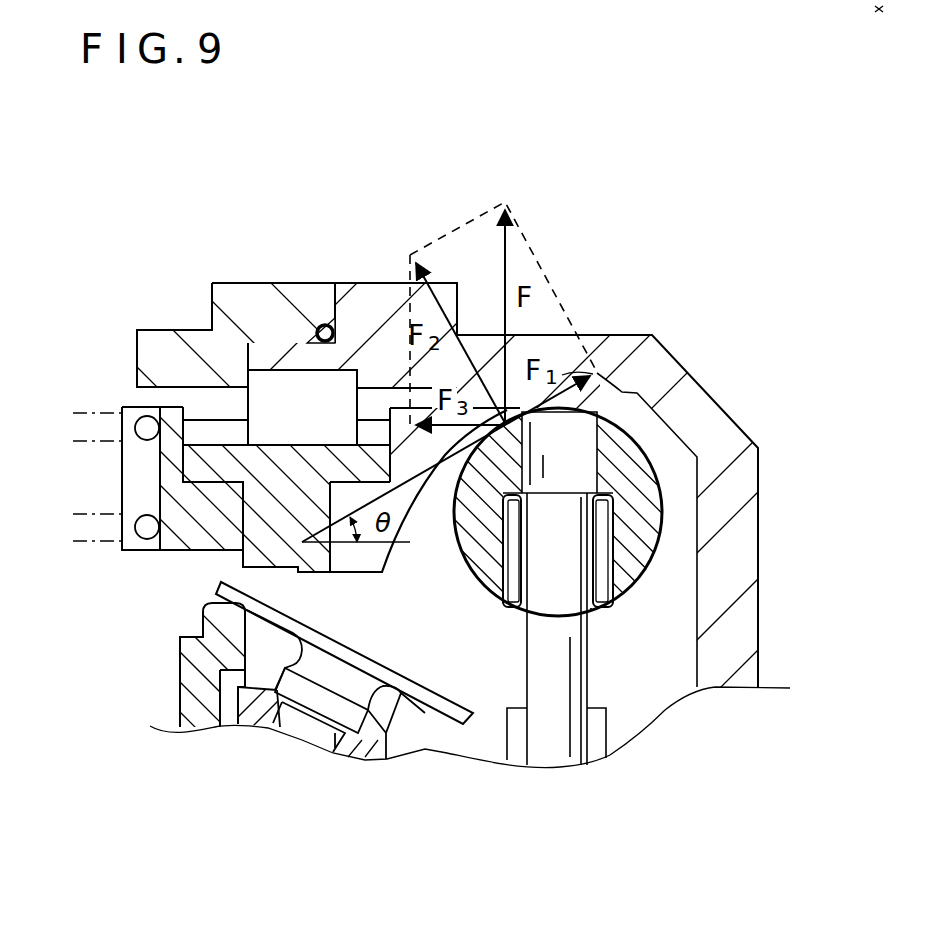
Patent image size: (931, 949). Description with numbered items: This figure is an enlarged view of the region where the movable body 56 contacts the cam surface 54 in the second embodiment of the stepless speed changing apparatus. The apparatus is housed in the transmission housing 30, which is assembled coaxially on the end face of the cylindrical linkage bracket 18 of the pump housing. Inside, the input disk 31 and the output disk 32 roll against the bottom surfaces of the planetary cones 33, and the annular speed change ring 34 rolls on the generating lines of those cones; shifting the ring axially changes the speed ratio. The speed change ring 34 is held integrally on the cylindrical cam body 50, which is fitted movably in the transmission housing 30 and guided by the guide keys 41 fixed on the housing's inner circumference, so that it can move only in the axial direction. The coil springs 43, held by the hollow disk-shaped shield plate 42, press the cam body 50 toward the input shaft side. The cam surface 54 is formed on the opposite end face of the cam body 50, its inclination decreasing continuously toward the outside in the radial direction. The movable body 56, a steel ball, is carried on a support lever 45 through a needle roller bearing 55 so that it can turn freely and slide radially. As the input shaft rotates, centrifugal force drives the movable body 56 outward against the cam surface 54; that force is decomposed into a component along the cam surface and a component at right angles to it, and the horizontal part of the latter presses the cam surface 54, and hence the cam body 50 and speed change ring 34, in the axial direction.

The linkage bracket 18 is at (237, 290).
The transmission housing 30 is at (750, 517).
The input disk 31 is at (413, 743).
The output disk 32 is at (202, 670).
The planetary cones 33 is at (243, 588).
The speed change ring 34 is at (250, 507).
The guide keys 41 is at (280, 383).
The shield plate 42 is at (197, 413).
The coil springs 43 is at (80, 413).
The support levers 45 is at (590, 658).
The cam body 50 is at (170, 458).
The cam surface 54 is at (413, 510).
The needle roller bearing 55 is at (603, 562).
The movable body 56 is at (640, 463).